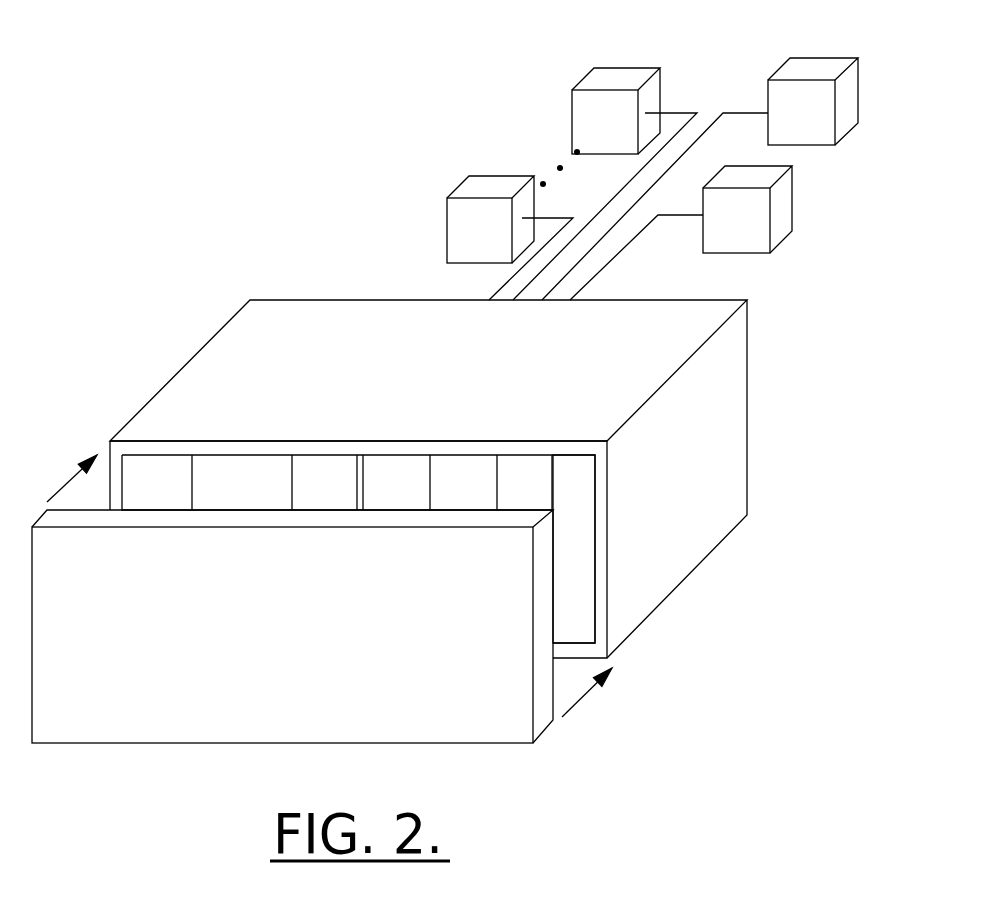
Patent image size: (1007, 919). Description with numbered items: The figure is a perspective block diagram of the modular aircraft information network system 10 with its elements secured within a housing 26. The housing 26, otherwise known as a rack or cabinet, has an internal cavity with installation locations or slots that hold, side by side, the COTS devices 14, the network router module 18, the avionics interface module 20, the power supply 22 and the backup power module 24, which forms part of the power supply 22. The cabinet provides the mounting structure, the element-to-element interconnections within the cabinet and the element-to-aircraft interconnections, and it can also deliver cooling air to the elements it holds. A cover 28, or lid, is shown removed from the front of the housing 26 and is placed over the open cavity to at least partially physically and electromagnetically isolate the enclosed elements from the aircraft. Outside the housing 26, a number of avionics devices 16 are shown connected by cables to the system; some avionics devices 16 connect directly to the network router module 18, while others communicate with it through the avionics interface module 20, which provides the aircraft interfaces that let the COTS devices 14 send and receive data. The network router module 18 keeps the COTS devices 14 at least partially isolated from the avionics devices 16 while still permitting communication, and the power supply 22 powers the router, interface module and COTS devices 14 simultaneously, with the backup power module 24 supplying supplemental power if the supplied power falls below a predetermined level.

The modular aircraft information network system 10 is at (445, 393).
The COTS device 14 is at (214, 450).
The avionics device 16 is at (639, 157).
The network router module 18 is at (373, 450).
The avionics interface module 20 is at (438, 450).
The power supply 22 is at (499, 450).
The backup power module 24 is at (536, 494).
The housing 26 is at (397, 508).
The cover 28 is at (323, 641).